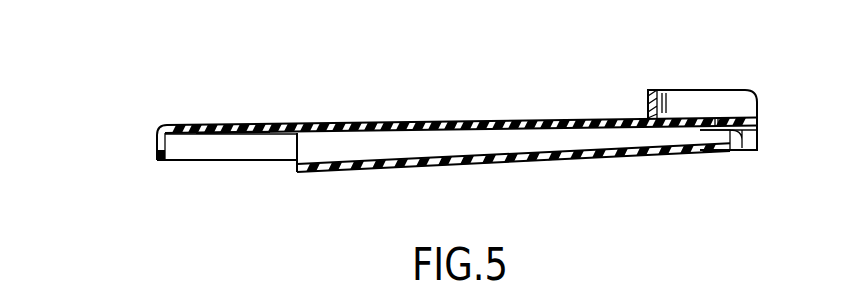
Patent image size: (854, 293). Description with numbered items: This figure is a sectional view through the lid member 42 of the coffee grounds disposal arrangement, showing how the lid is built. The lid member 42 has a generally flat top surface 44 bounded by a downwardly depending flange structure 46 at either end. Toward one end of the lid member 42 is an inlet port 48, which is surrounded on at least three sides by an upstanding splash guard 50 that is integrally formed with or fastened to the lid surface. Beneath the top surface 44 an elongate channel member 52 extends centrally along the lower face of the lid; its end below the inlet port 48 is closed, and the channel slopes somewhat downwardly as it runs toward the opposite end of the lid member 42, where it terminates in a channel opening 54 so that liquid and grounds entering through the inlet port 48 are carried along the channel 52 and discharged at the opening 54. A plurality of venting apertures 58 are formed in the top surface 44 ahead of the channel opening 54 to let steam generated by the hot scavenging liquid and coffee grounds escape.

The lid member 42 is at (400, 122).
The top surface 44 is at (510, 122).
The flange structure 46 is at (157, 147).
The inlet port 48 is at (700, 130).
The splash guard 50 is at (672, 88).
The channel member 52 is at (388, 165).
The channel opening 54 is at (297, 150).
The venting apertures 58 is at (266, 126).